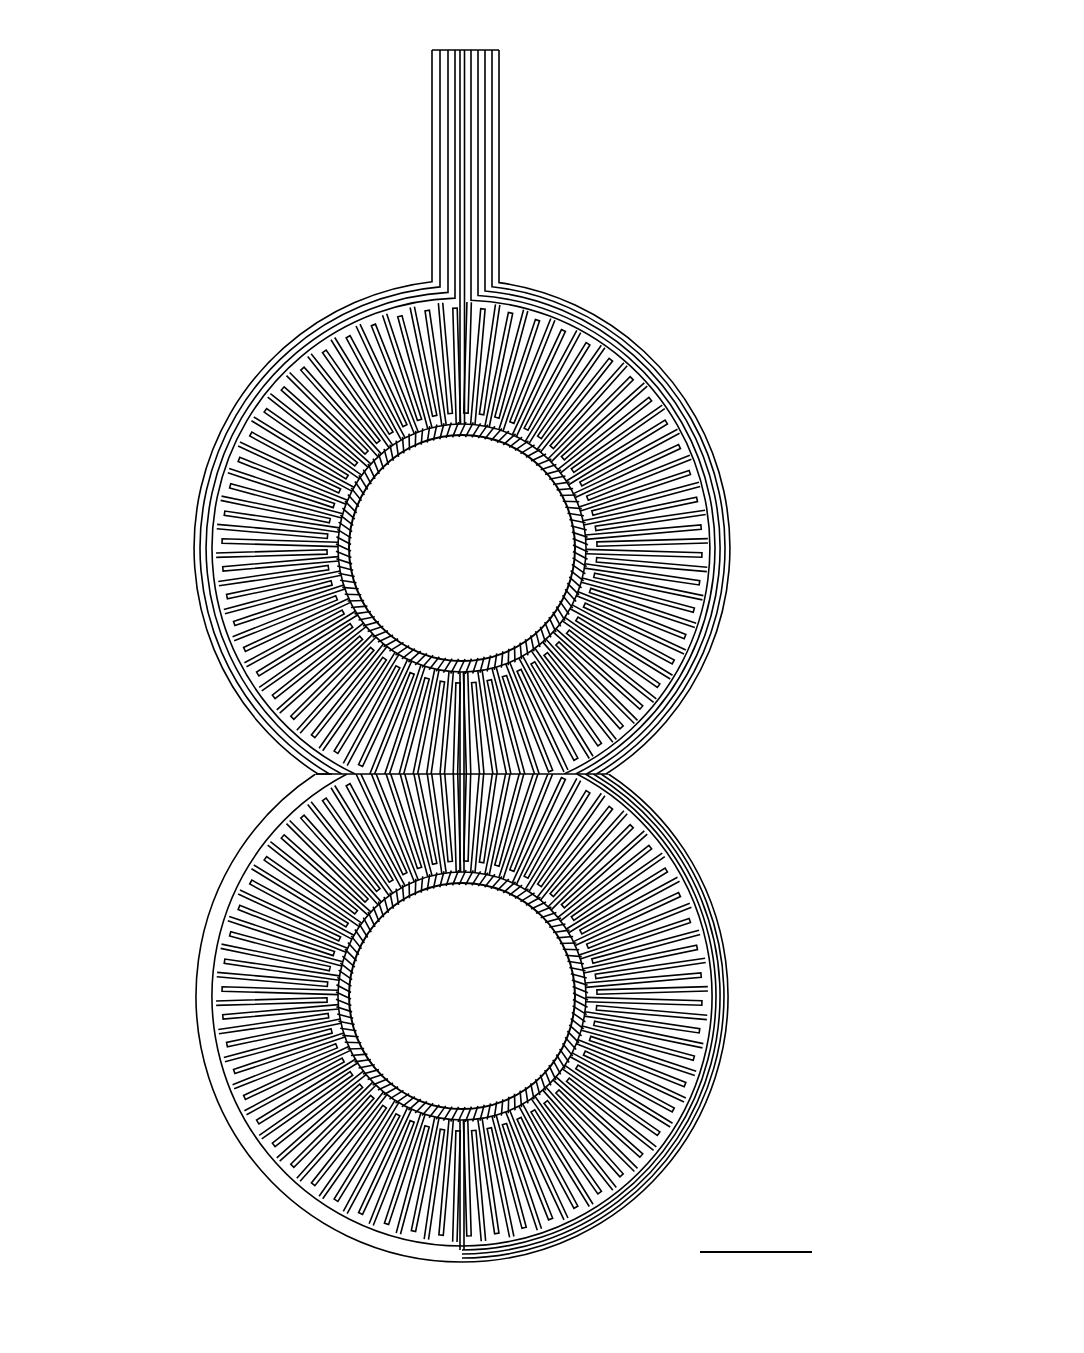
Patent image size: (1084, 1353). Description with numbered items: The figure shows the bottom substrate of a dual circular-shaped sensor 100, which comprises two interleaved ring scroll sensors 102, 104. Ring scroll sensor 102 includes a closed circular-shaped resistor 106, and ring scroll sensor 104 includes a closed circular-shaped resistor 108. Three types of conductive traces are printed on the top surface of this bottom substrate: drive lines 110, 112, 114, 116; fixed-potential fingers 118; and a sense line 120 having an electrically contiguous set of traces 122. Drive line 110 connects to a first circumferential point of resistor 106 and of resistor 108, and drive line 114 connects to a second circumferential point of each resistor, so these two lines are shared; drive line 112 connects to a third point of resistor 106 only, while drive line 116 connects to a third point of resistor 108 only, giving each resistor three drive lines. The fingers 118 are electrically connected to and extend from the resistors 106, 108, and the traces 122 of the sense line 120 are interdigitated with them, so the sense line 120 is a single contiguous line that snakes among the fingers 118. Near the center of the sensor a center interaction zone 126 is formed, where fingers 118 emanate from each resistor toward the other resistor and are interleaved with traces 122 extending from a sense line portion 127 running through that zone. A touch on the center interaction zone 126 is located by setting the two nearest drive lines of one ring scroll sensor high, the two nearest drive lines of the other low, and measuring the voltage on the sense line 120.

The dual circular-shaped sensor 100 is at (744, 297).
The ring scroll sensor 102 is at (764, 531).
The ring scroll sensor 104 is at (739, 937).
The closed circular-shaped resistor 106 is at (462, 548).
The closed circular-shaped resistor 108 is at (461, 996).
The drive line 110 is at (437, 50).
The drive line 112 is at (462, 50).
The drive line 114 is at (472, 50).
The drive line 116 is at (485, 50).
The fixed-potential fingers 118 is at (612, 390).
The sense line 120 is at (443, 50).
The electrically contiguous traces 122 is at (548, 318).
The center interaction zone 126 is at (522, 752).
The sense line portion 127 is at (357, 780).